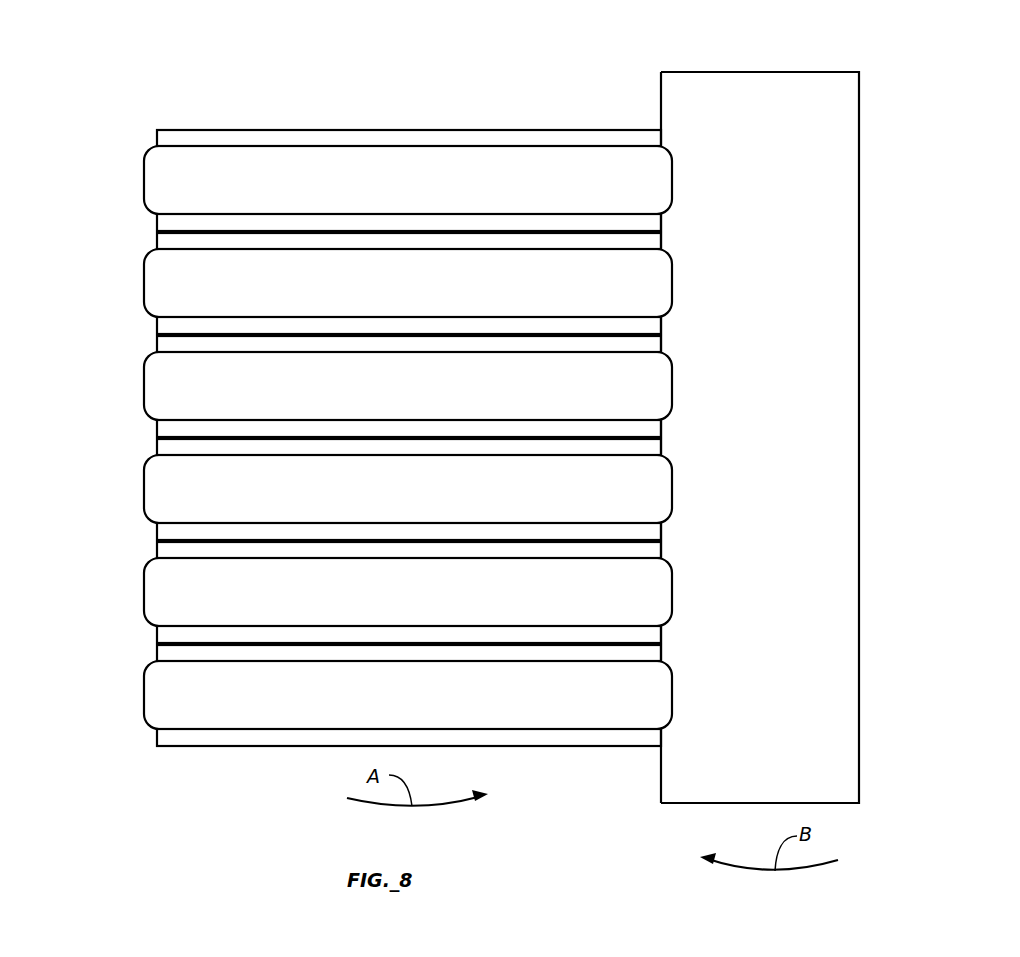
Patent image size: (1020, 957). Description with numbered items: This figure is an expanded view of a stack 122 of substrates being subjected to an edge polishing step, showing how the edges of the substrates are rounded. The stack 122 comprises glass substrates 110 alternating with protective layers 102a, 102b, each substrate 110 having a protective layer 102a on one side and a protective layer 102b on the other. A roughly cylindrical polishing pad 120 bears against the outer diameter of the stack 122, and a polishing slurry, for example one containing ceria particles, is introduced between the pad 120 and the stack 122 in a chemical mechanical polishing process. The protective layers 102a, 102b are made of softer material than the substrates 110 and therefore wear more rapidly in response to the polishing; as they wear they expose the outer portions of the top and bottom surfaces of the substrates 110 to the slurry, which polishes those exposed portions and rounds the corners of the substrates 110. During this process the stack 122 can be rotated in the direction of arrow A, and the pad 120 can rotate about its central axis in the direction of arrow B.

The protective layer 102a is at (157, 137).
The protective layer 102b is at (157, 224).
The substrate 110 is at (382, 191).
The polishing pad 120 is at (749, 72).
The stack 122 is at (372, 380).